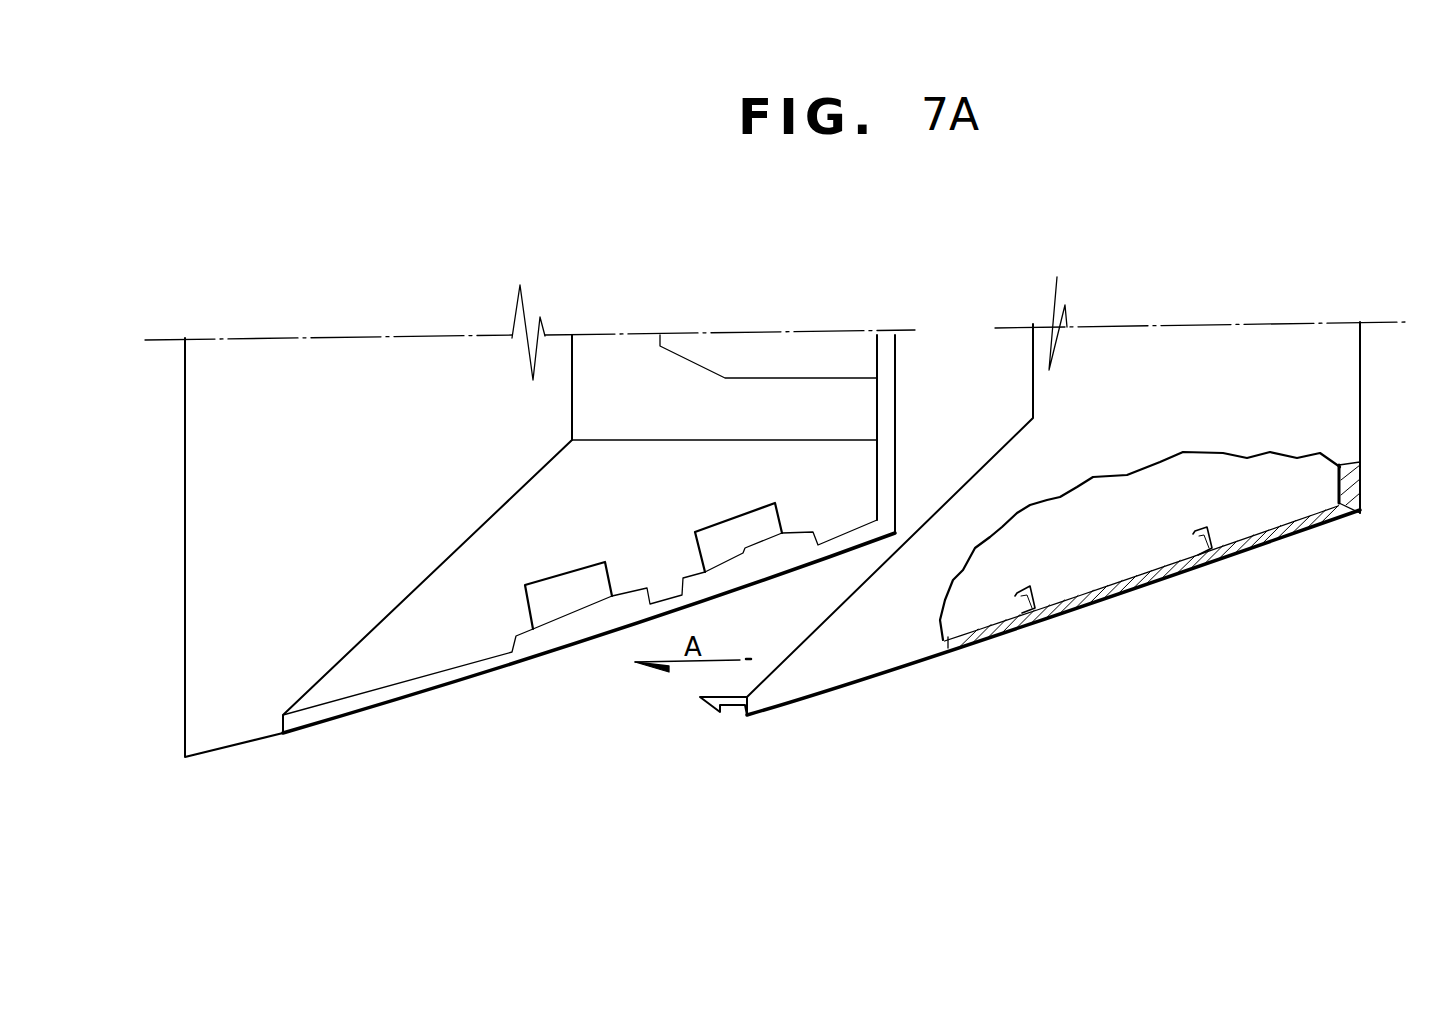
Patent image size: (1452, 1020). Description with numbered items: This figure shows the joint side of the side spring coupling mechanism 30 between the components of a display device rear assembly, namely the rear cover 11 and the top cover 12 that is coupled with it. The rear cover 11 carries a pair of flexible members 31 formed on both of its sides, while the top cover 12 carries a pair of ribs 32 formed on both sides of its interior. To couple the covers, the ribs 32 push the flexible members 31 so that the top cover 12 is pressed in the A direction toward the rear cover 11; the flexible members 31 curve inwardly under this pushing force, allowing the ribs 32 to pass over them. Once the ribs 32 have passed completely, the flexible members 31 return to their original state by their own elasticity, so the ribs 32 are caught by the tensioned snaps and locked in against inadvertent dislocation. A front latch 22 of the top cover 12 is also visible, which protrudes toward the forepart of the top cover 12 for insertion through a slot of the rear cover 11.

The rear cover 11 is at (213, 513).
The top cover 12 is at (1330, 425).
The latch 22 is at (710, 707).
The side spring coupling mechanism 30 is at (537, 792).
The flexible member 31 is at (567, 612).
The rib 32 is at (1012, 602).